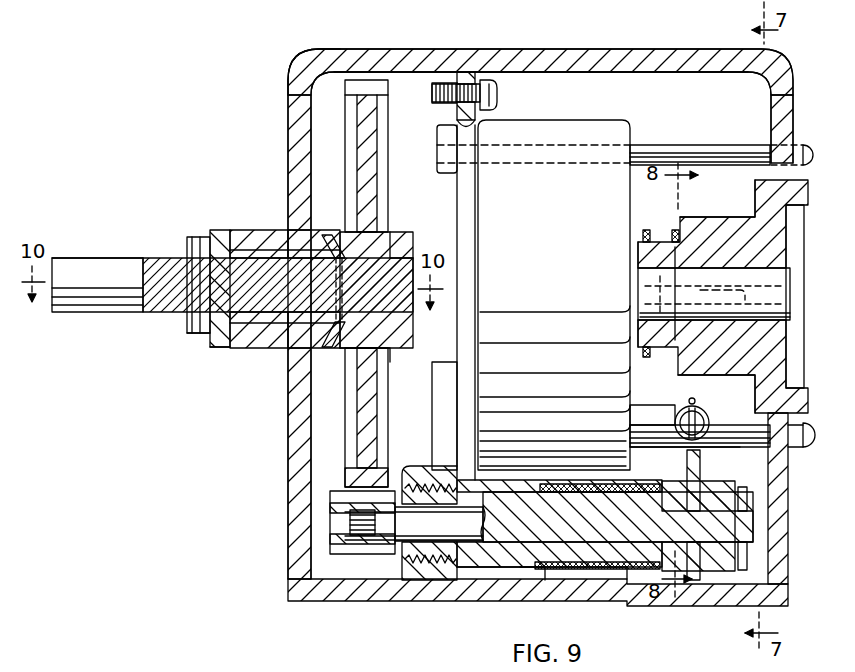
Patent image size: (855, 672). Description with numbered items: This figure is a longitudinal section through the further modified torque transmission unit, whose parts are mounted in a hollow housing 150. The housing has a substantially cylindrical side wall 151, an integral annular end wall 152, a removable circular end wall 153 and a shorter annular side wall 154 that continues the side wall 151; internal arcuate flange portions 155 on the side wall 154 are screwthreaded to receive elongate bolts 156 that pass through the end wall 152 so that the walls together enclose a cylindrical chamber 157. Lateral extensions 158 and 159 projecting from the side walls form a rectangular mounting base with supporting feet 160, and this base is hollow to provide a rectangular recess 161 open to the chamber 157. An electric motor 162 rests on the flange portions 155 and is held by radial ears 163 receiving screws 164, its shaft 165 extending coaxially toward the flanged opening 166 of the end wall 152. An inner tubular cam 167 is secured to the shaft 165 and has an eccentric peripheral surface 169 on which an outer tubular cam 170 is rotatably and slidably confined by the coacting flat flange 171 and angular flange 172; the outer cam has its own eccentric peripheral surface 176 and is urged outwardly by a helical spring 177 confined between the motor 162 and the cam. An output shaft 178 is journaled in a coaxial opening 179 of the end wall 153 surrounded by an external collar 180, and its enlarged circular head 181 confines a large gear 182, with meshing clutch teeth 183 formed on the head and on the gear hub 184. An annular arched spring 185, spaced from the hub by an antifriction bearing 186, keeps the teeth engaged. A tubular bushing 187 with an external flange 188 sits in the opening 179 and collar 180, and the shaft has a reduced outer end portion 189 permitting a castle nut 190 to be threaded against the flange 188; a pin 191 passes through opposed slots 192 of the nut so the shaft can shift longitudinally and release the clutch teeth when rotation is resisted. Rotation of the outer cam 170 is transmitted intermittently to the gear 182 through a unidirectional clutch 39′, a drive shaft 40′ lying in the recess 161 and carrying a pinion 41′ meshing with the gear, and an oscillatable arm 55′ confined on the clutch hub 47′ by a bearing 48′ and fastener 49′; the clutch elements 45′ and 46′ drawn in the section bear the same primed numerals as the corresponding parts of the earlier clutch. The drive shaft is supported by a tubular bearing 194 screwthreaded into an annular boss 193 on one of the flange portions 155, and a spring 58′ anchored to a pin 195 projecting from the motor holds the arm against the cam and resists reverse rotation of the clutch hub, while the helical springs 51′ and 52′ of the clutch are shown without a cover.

The housing 150 is at (830, 53).
The cylindrical side wall 151 is at (644, 52).
The annular end wall 152 is at (770, 99).
The circular end wall 153 is at (292, 96).
The annular side wall 154 is at (383, 50).
The arcuate flange portions 155 is at (440, 108).
The elongate bolts 156 is at (742, 150).
The cylindrical chamber 157 is at (712, 76).
The lateral extension 158 is at (789, 520).
The lateral extension 159 is at (292, 524).
The supporting feet 160 is at (328, 602).
The rectangular recess 161 is at (618, 596).
The electric motor 162 is at (608, 122).
The radial ears 163 is at (468, 72).
The screws 164 is at (496, 96).
The motor shaft 165 is at (790, 292).
The flanged opening 166 is at (795, 152).
The inner tubular cam 167 is at (642, 256).
The eccentric peripheral surface 169 is at (672, 236).
The outer tubular cam 170 is at (738, 196).
The flat flange 171 is at (787, 362).
The angular flange 172 is at (805, 198).
The eccentric peripheral surface 176 is at (742, 368).
The helical spring 177 is at (643, 236).
The output shaft 178 is at (126, 338).
The coaxial opening 179 is at (272, 238).
The external collar 180 is at (266, 348).
The circular head 181 is at (414, 252).
The gear 182 is at (347, 150).
The clutch teeth 183 is at (392, 232).
The gear hub 184 is at (386, 352).
The arched spring 185 is at (327, 348).
The antifriction bearing 186 is at (335, 235).
The tubular bushing 187 is at (242, 240).
The external flange 188 is at (222, 348).
The outer end portion 189 is at (118, 258).
The castle nut 190 is at (212, 232).
The pin 191 is at (194, 332).
The slots 192 is at (194, 244).
The annular boss 193 is at (418, 467).
The tubular bearing 194 is at (468, 592).
The pin 195 is at (668, 400).
The unidirectional clutch 39′ is at (645, 585).
The drive shaft 40′ is at (754, 540).
The pinion 41′ is at (358, 554).
The threaded block 45′ is at (412, 580).
The lower rail 46′ is at (582, 592).
The clutch hub 47′ is at (670, 481).
The bearing 48′ is at (748, 576).
The fastener 49′ is at (748, 496).
The helical spring 51′ is at (600, 488).
The helical spring 52′ is at (532, 588).
The oscillatable arm 55′ is at (700, 470).
The spring 58′ is at (710, 414).